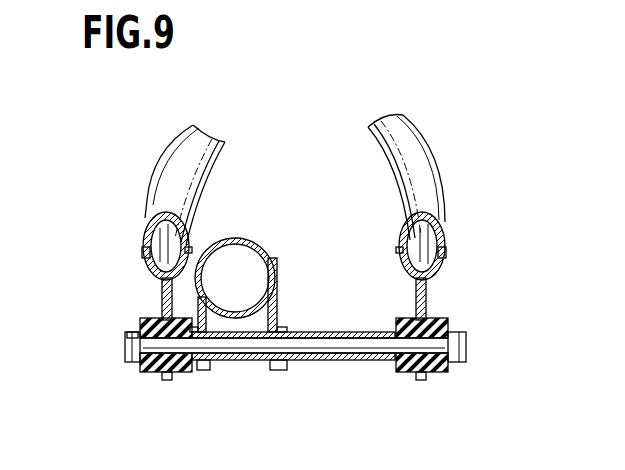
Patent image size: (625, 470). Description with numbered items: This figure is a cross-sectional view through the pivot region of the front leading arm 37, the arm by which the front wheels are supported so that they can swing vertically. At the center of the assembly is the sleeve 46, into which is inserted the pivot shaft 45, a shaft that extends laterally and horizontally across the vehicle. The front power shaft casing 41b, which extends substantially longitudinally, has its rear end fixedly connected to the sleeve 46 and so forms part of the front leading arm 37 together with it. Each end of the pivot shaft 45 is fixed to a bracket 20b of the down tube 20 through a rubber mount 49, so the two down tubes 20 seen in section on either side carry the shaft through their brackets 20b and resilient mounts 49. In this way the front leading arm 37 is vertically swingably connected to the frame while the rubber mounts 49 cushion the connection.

The down tube 20 is at (163, 170).
The bracket 20b is at (160, 298).
The front power shaft casing 41b is at (245, 238).
The pivot shaft 45 is at (302, 349).
The sleeve 46 is at (325, 333).
The rubber mount 49 is at (147, 372).
The front leading arm 37 is at (238, 361).